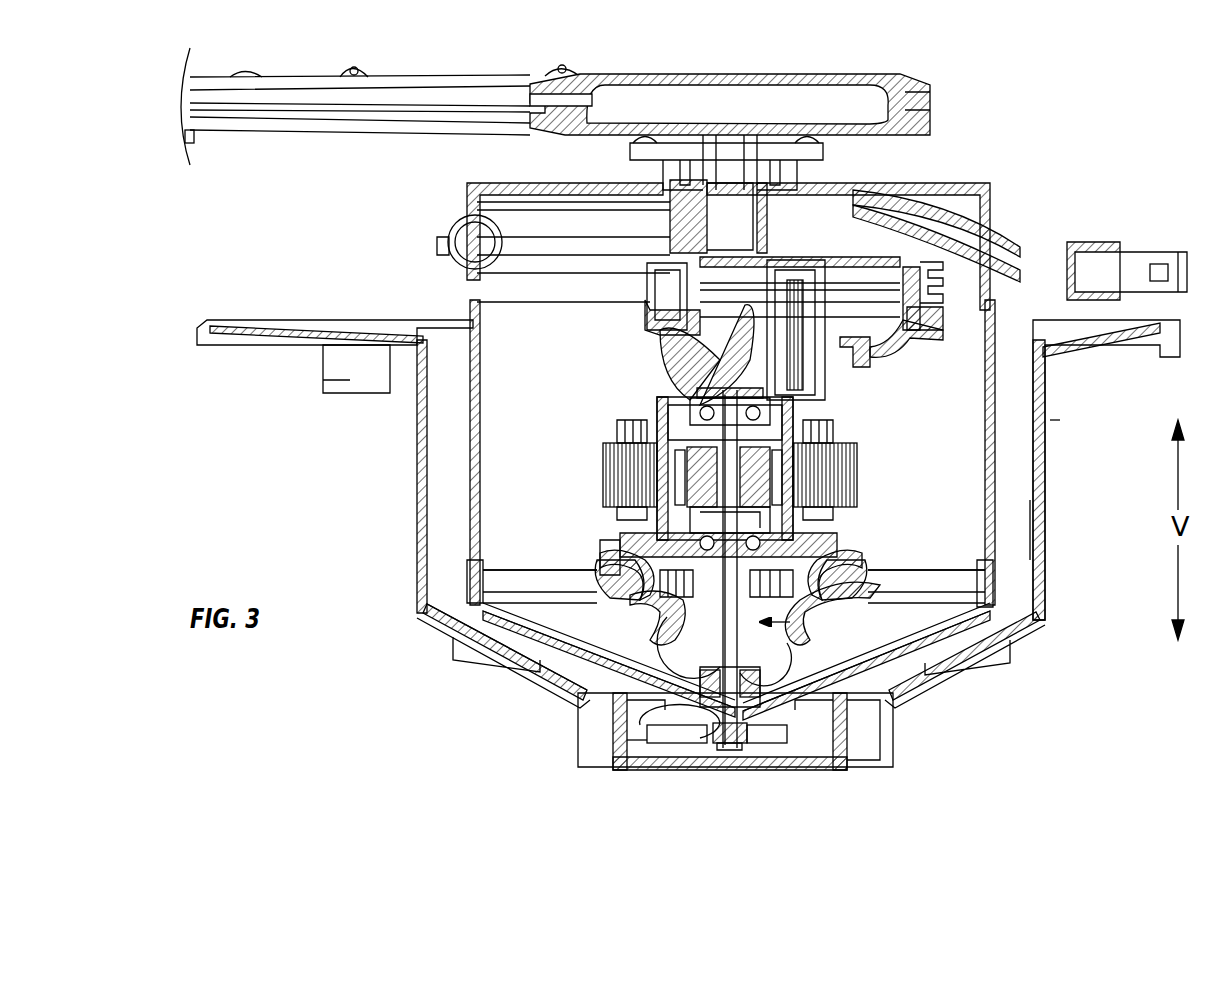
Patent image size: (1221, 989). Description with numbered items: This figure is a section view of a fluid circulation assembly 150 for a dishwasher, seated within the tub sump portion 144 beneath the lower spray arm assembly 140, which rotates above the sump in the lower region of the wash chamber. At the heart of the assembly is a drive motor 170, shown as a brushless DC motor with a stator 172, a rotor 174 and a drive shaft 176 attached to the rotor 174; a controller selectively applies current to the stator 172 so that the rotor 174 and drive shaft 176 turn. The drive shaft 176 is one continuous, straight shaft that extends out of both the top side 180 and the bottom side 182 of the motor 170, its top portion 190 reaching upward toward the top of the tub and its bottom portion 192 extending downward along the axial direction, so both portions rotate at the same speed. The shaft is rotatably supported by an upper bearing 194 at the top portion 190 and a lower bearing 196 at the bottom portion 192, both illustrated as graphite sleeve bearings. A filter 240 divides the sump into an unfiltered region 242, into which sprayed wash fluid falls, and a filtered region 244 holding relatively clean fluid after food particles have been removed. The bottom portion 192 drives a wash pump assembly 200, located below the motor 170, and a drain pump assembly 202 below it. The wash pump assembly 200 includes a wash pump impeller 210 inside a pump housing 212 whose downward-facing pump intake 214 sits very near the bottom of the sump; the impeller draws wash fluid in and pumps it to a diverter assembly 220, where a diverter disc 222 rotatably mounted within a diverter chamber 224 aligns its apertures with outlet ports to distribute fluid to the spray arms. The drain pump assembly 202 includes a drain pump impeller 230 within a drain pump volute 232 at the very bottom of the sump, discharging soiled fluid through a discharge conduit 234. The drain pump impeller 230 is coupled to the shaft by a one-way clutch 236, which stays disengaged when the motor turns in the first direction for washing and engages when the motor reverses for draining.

The lower spray arm assembly 140 is at (470, 78).
The tub sump portion 144 is at (417, 470).
The fluid circulation assembly 150 is at (495, 483).
The drive motor 170 is at (878, 432).
The stator 172 is at (845, 463).
The rotor 174 is at (785, 480).
The drive shaft 176 is at (700, 647).
The top side 180 is at (690, 438).
The bottom side 182 is at (640, 560).
The top portion 190 is at (790, 410).
The bottom portion 192 is at (808, 595).
The upper bearing 194 is at (700, 420).
The lower bearing 196 is at (800, 541).
The wash pump assembly 200 is at (612, 620).
The drain pump assembly 202 is at (735, 790).
The wash pump impeller 210 is at (850, 597).
The pump housing 212 is at (880, 557).
The pump intake 214 is at (660, 740).
The diverter assembly 220 is at (633, 320).
The diverter disc 222 is at (855, 285).
The diverter chamber 224 is at (878, 310).
The drain pump impeller 230 is at (688, 735).
The drain pump volute 232 is at (820, 748).
The discharge conduit 234 is at (658, 755).
The one-way clutch 236 is at (715, 743).
The filter 240 is at (512, 615).
The unfiltered region 242 is at (1017, 468).
The filtered region 244 is at (975, 540).